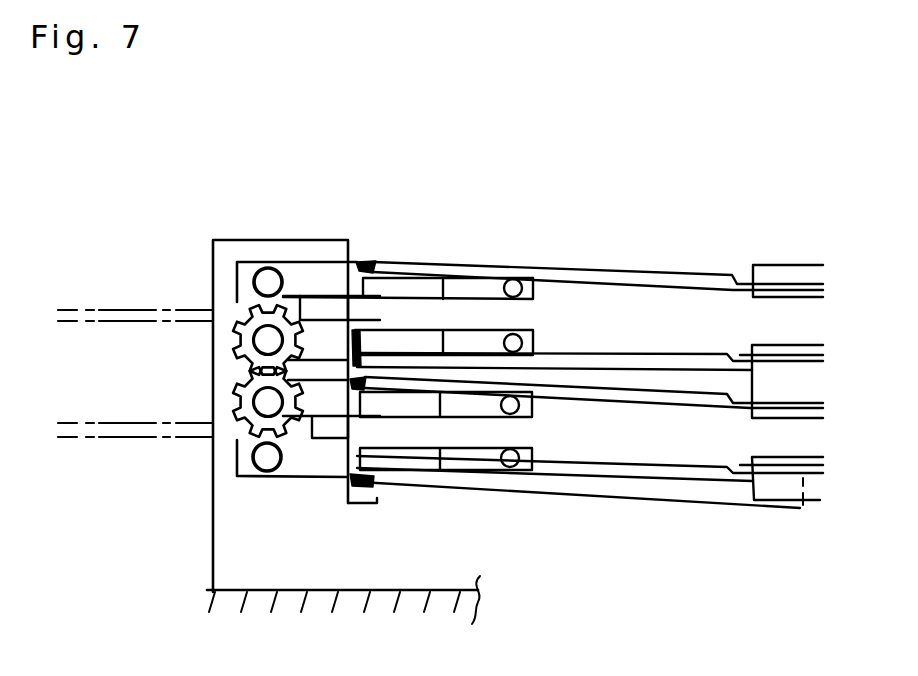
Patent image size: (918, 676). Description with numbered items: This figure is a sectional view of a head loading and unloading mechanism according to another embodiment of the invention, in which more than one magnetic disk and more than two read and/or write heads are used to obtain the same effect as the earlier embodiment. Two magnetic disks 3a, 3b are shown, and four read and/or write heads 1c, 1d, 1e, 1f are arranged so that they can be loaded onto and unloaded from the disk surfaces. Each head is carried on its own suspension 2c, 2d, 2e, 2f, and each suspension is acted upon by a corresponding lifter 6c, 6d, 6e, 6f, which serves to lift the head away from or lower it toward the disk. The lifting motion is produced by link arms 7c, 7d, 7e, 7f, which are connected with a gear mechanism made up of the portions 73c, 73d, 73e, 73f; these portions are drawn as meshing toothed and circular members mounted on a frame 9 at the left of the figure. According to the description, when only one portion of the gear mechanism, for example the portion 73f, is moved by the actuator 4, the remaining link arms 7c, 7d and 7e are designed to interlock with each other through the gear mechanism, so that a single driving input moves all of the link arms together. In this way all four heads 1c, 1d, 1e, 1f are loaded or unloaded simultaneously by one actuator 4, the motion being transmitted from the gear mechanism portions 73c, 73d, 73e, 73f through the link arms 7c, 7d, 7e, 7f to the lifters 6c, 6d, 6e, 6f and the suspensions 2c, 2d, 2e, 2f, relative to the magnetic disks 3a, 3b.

The frame 9 is at (242, 240).
The link arm 7c is at (320, 262).
The link arm 7d is at (307, 293).
The link arm 7e is at (310, 418).
The link arm 7f is at (372, 505).
The gear mechanism 73c is at (241, 292).
The gear mechanism 73d is at (236, 349).
The gear mechanism 73e is at (240, 405).
The gear mechanism 73f is at (244, 440).
The magnetic disk 3a is at (93, 313).
The magnetic disk 3b is at (93, 427).
The read and/or write head 1c is at (442, 291).
The read and/or write head 1d is at (440, 339).
The read and/or write head 1e is at (447, 415).
The read and/or write head 1f is at (420, 475).
The lifter 6c is at (504, 283).
The lifter 6d is at (530, 349).
The lifter 6e is at (527, 410).
The lifter 6f is at (498, 474).
The suspension 2c is at (632, 262).
The suspension 2d is at (637, 352).
The suspension 2e is at (632, 401).
The suspension 2f is at (633, 487).
The actuator 4 is at (774, 272).